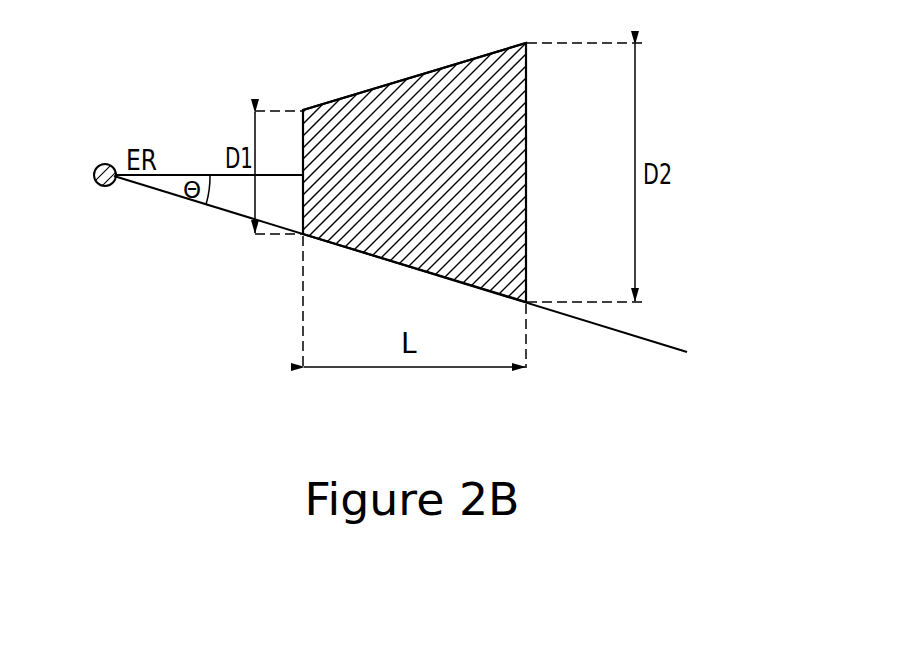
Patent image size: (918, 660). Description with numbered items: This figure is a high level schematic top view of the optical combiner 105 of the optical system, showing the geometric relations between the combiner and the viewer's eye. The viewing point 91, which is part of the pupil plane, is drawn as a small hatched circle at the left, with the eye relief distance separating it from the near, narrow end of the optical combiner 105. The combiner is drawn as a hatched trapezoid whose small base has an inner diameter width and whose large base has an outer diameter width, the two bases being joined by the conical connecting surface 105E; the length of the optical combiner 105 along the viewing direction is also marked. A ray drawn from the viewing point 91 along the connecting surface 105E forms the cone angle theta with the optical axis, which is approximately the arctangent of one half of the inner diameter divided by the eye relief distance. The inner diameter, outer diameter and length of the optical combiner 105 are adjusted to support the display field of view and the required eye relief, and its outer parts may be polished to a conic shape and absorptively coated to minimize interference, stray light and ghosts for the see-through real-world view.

The viewing point 91 is at (96, 167).
The optical combiner 105 is at (516, 68).
The connecting surface 105E is at (362, 97).